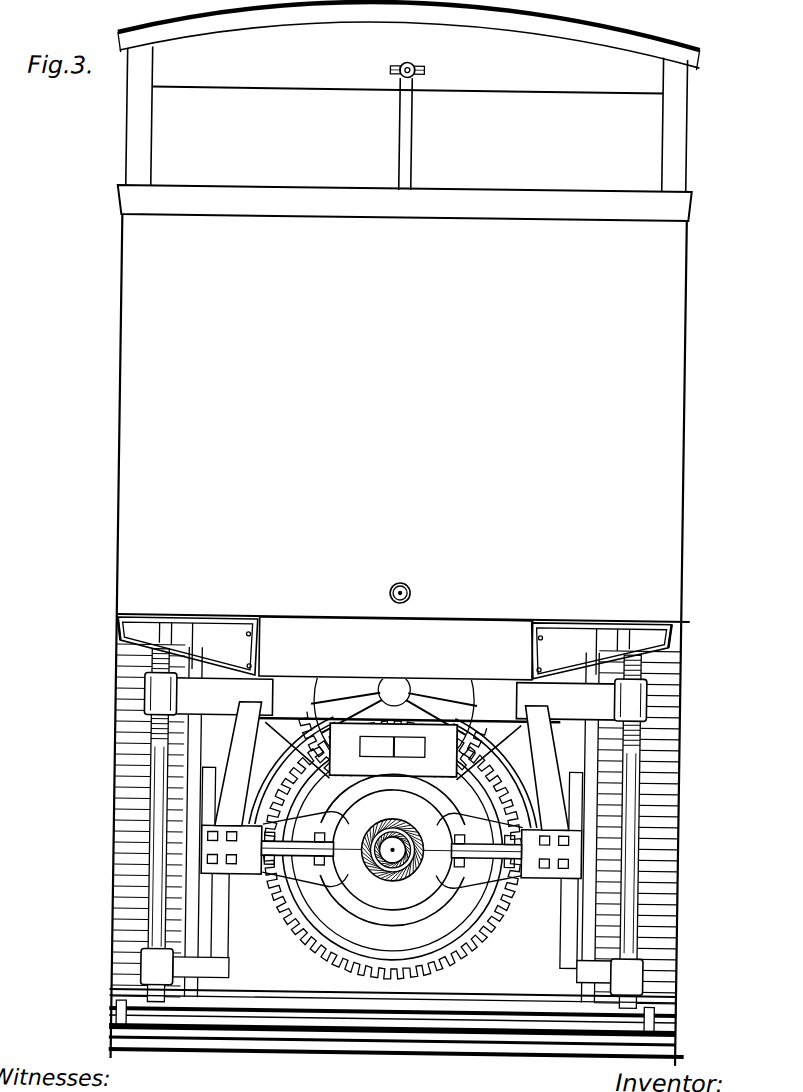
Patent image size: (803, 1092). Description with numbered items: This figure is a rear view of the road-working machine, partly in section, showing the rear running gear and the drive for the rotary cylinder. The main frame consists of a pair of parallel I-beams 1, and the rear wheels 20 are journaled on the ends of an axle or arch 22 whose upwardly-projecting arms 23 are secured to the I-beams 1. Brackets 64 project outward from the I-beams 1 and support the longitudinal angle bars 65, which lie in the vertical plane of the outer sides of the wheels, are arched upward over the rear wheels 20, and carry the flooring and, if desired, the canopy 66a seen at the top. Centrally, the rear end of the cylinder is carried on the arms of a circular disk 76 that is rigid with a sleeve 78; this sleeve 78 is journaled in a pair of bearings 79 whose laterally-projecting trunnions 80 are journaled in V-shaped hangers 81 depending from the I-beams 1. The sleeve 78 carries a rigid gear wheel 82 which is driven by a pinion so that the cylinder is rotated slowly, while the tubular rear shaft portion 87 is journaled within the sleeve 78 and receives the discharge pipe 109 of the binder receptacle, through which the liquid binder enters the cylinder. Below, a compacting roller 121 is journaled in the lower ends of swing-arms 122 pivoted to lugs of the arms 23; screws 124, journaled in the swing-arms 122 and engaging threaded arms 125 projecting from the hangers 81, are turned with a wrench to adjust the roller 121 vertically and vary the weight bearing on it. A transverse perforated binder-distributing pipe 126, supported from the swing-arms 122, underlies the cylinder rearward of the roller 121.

The I-beams 1 is at (260, 620).
The rear wheels 20 is at (119, 786).
The axle or arch 22 is at (255, 791).
The arms 23 is at (142, 750).
The brackets 64 is at (207, 624).
The angle bars 65 is at (118, 630).
The canopy 66a is at (405, 26).
The circular disk 76 is at (345, 955).
The sleeve 78 is at (369, 871).
The bearings 79 is at (394, 871).
The trunnions 80 is at (208, 861).
The hangers 81 is at (394, 765).
The gear wheel 82 is at (424, 974).
The rear shaft portion 87 is at (387, 829).
The discharge pipe 109 is at (400, 583).
The roller 121 is at (281, 1047).
The swing-arms 122 is at (220, 968).
The screws 124 is at (155, 917).
The threaded arms 125 is at (150, 695).
The binder-distributing pipe 126 is at (541, 1038).